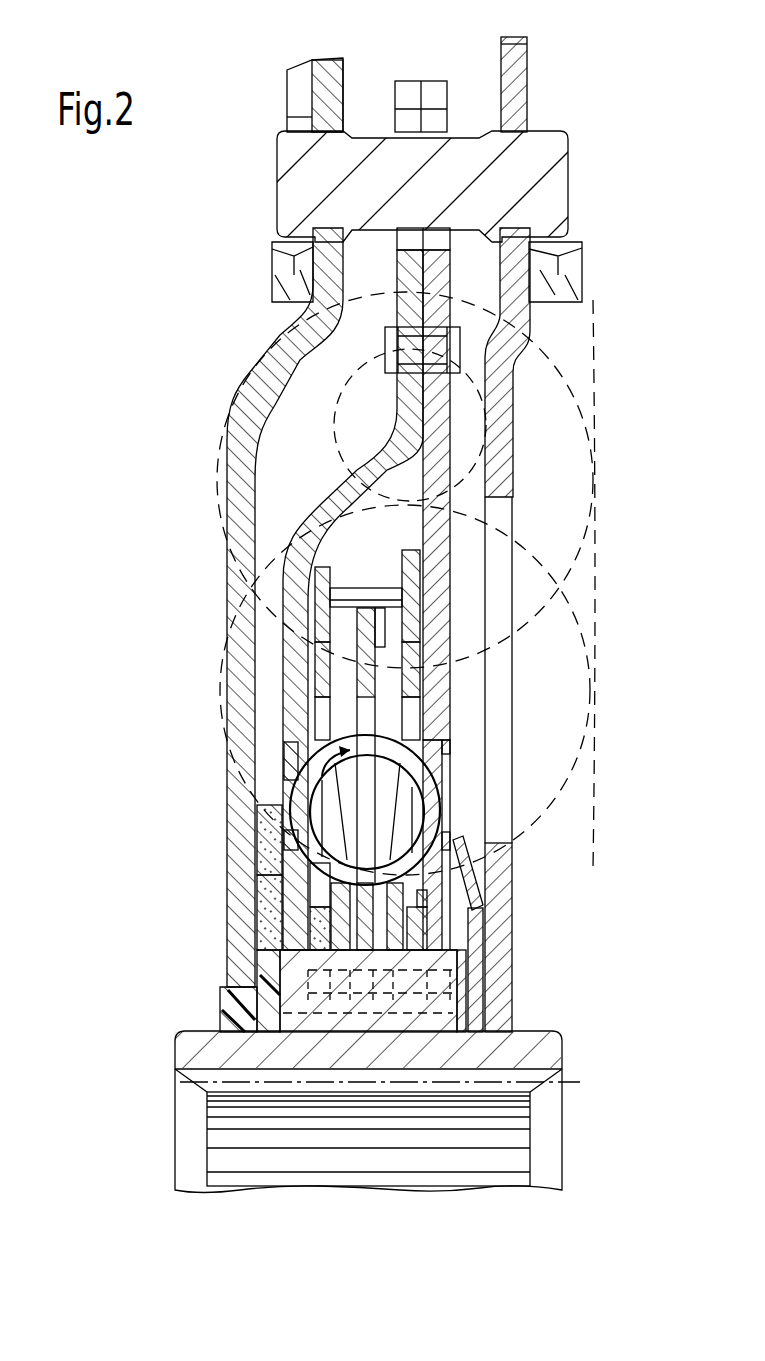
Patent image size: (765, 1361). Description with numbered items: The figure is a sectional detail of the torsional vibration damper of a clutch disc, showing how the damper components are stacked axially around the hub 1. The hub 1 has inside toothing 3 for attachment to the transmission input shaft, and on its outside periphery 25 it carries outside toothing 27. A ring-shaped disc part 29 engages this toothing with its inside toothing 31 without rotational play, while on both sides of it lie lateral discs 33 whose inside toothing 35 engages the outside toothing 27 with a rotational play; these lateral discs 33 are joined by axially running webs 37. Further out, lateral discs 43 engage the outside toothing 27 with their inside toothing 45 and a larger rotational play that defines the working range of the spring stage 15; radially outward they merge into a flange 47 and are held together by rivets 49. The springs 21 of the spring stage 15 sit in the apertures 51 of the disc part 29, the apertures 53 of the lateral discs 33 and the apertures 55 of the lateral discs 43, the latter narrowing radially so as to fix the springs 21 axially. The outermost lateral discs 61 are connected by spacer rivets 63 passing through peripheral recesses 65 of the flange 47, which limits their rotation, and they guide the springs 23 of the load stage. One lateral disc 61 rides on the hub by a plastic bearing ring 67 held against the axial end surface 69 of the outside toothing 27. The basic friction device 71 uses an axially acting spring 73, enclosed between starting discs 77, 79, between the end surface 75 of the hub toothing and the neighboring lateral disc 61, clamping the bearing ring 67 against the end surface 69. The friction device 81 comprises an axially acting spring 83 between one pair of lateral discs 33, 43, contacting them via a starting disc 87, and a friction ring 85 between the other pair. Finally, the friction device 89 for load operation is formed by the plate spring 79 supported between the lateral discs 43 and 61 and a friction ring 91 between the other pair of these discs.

The hub 1 is at (550, 1050).
The inside toothing 3 is at (527, 1087).
The spring stage 15 is at (297, 772).
The springs 21 is at (300, 837).
The springs 23 is at (598, 418).
The outside periphery 25 is at (200, 1030).
The outside toothing 27 is at (310, 1000).
The disc part 29 is at (363, 665).
The inside toothing 31 is at (355, 993).
The lateral discs 33 is at (320, 620).
The inside toothing 35 is at (331, 993).
The webs 37 is at (345, 605).
The lateral discs 43 is at (320, 562).
The inside toothing 45 is at (293, 1012).
The flange 47 is at (450, 296).
The rivets 49 is at (443, 345).
The apertures 51 is at (368, 802).
The apertures 53 is at (333, 820).
The apertures 55 is at (283, 740).
The lateral discs 61 is at (243, 392).
The spacer rivets 63 is at (466, 150).
The peripheral recesses 65 is at (403, 110).
The bearing ring 67 is at (225, 988).
The axial end surface 69 is at (268, 997).
The basic friction device 71 is at (516, 1007).
The axially acting spring 73 is at (463, 995).
The end surface 75 is at (452, 1032).
The starting disc 77 is at (466, 960).
The starting disc 79 is at (468, 862).
The friction device 81 is at (308, 918).
The axially acting spring 83 is at (422, 935).
The friction ring 85 is at (320, 935).
The starting disc 87 is at (422, 905).
The friction device 89 is at (270, 890).
The friction ring 91 is at (272, 803).